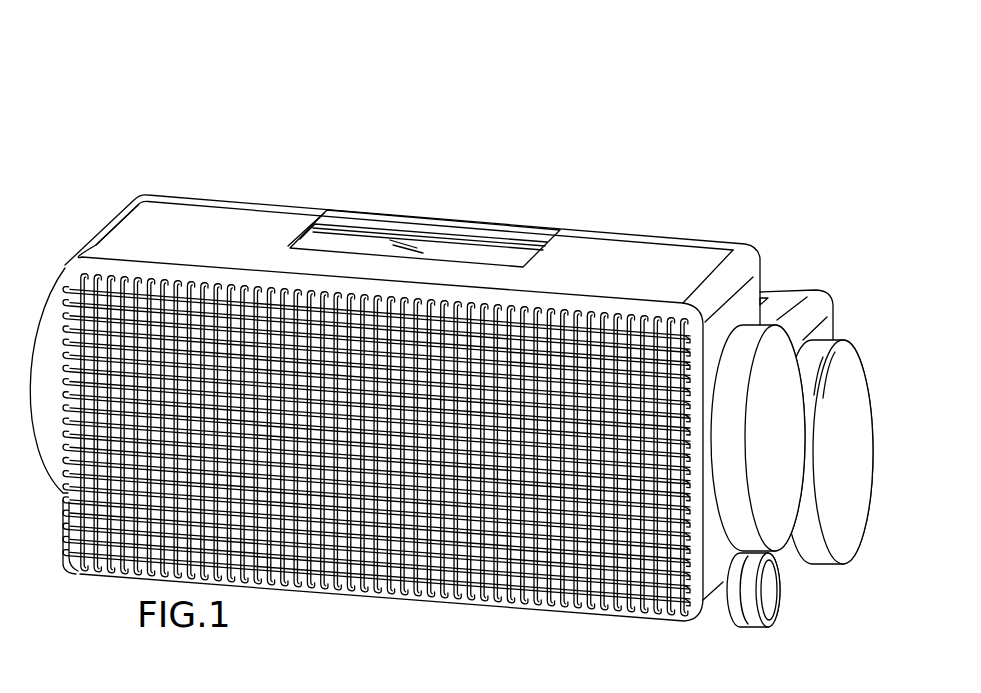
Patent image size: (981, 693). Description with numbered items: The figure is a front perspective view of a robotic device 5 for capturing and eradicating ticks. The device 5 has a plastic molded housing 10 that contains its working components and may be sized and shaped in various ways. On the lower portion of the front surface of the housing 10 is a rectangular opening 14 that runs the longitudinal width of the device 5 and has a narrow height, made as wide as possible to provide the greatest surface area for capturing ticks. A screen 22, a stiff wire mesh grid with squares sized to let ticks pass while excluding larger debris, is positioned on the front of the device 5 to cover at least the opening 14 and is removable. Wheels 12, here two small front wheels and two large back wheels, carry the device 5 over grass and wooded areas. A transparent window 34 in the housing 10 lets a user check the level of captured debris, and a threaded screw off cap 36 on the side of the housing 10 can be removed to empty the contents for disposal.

The robotic device 5 is at (114, 117).
The housing 10 is at (207, 212).
The wheels 12 is at (810, 552).
The opening 14 is at (108, 506).
The screen 22 is at (96, 272).
The transparent window 34 is at (368, 246).
The screw off cap 36 is at (793, 420).